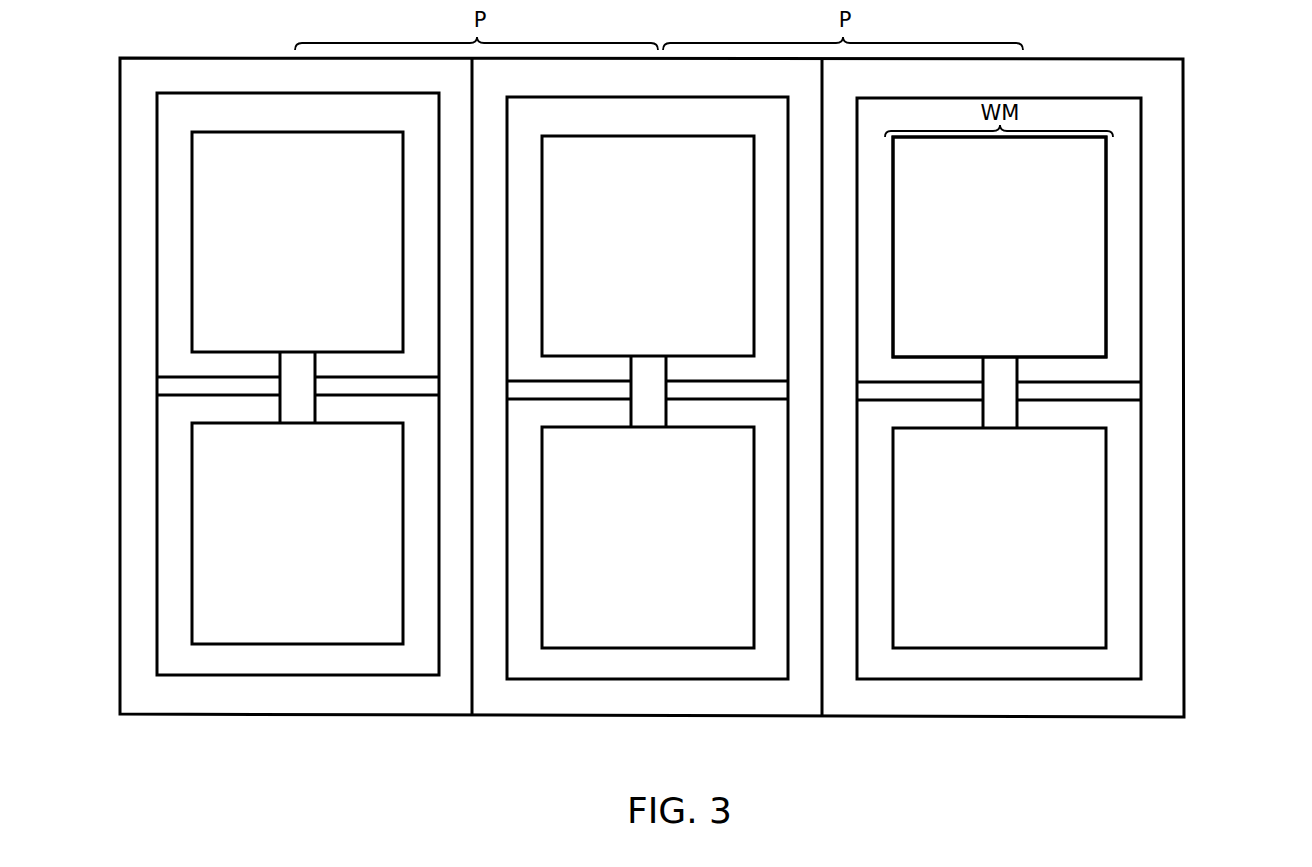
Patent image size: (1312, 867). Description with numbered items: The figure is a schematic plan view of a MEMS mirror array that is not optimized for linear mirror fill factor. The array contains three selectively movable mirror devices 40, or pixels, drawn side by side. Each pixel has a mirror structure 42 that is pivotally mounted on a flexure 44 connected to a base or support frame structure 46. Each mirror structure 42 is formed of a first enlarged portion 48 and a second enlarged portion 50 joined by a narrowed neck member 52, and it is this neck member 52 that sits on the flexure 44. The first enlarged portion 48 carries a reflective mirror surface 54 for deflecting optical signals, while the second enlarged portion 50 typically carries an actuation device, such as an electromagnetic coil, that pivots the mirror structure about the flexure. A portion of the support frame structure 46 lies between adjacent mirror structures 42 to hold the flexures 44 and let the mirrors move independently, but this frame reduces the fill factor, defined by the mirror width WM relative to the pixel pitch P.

The selectively movable mirror device 40 is at (333, 728).
The mirror structure 42 is at (1245, 298).
The flexure 44 is at (423, 398).
The support frame structure 46 is at (445, 552).
The first enlarged portion 48 is at (1106, 235).
The second enlarged portion 50 is at (1106, 430).
The neck member 52 is at (1017, 417).
The reflective mirror surface 54 is at (283, 257).